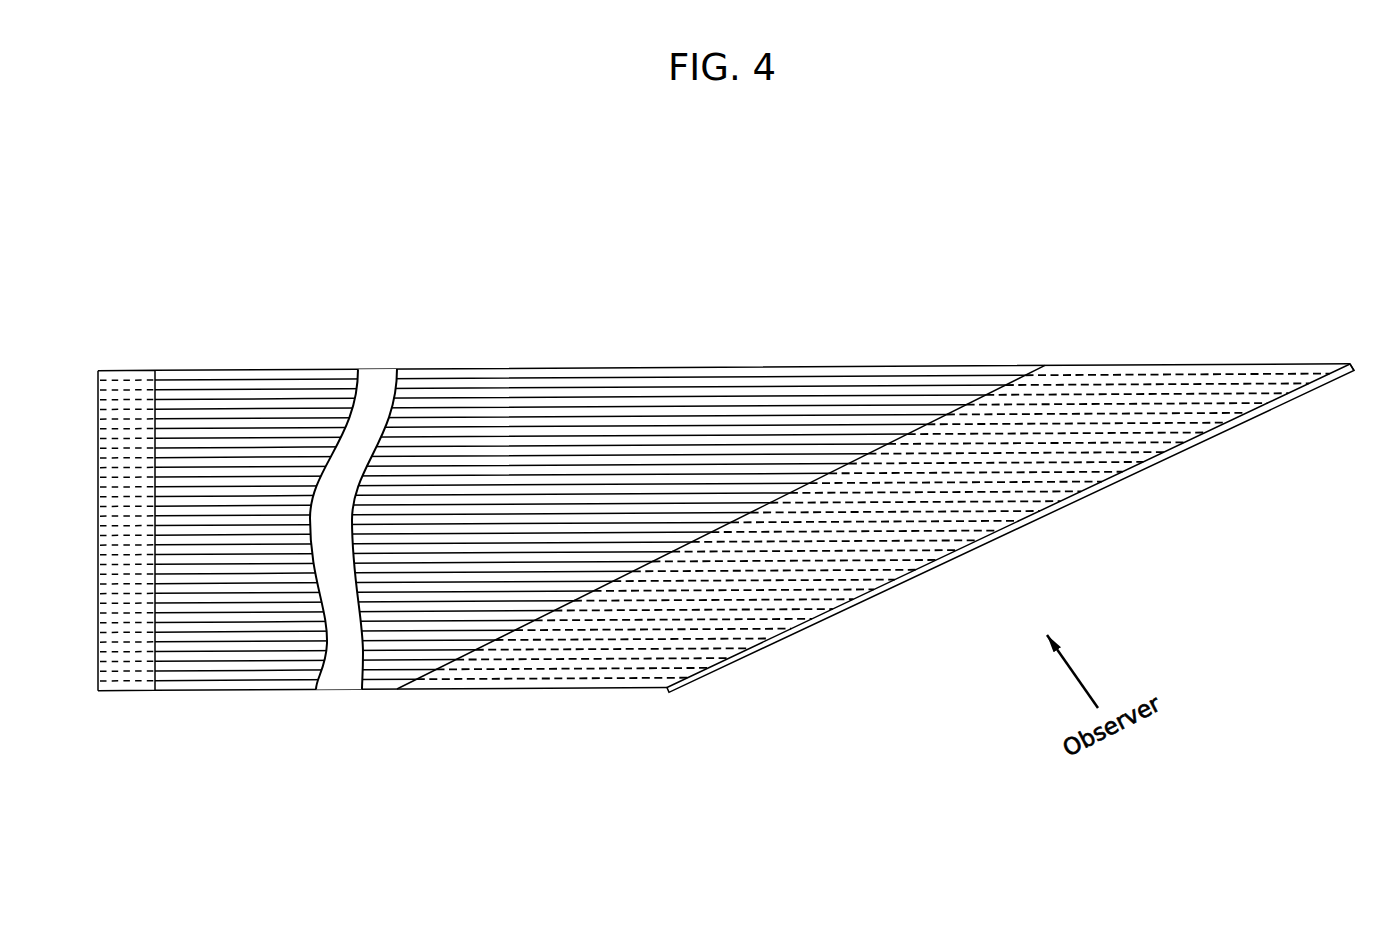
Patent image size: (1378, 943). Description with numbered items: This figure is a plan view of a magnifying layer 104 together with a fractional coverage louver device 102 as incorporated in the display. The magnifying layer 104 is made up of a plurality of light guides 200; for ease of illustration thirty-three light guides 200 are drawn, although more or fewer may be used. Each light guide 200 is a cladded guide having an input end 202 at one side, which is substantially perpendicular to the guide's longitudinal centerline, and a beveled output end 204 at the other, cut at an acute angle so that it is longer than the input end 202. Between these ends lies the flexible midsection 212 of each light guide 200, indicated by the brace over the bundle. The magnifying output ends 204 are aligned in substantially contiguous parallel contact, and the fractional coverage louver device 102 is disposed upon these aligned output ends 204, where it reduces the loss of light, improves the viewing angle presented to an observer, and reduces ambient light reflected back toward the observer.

The magnifying layer 104 is at (873, 270).
The light guide 200 is at (772, 362).
The input end 202 is at (98, 372).
The midsection 212 is at (160, 368).
The fractional coverage louver device 102 is at (698, 680).
The output end 204 is at (1342, 372).